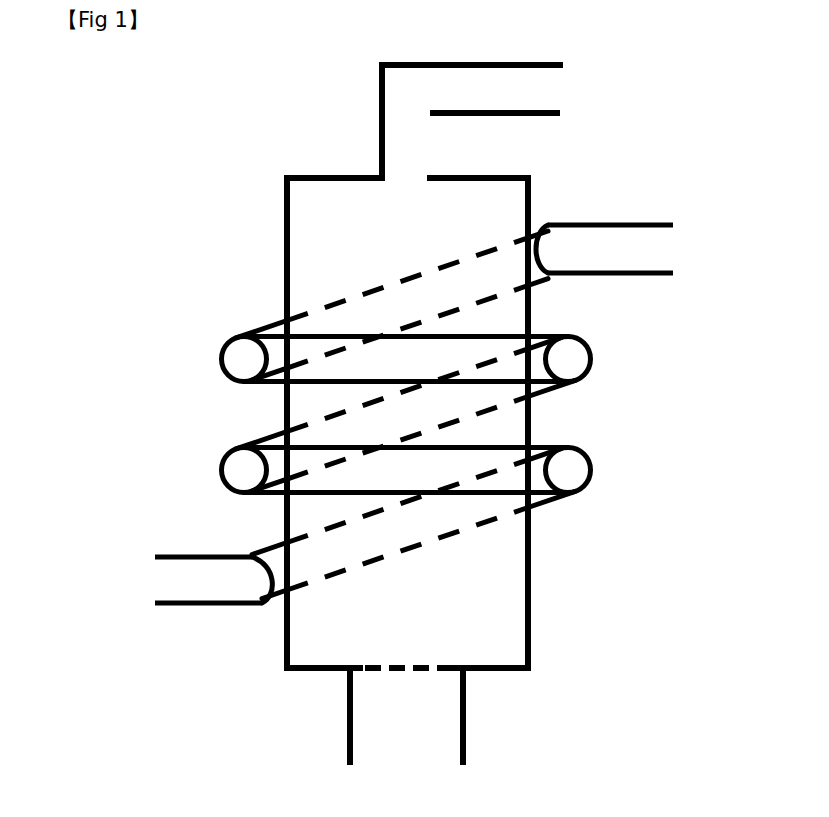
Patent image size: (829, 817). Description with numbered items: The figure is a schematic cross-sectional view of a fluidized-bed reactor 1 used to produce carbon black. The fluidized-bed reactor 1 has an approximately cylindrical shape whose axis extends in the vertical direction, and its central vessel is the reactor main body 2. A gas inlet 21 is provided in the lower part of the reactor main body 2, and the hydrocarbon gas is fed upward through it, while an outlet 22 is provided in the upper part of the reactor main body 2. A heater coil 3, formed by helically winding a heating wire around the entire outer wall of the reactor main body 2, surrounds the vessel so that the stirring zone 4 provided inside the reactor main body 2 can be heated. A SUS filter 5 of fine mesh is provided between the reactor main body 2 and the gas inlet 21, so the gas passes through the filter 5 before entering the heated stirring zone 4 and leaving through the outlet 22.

The fluidized-bed reactor 1 is at (223, 93).
The reactor main body 2 is at (530, 603).
The gas inlet 21 is at (385, 717).
The outlet 22 is at (527, 88).
The heater coil 3 is at (240, 361).
The stirring zone 4 is at (430, 415).
The SUS filter 5 is at (407, 672).